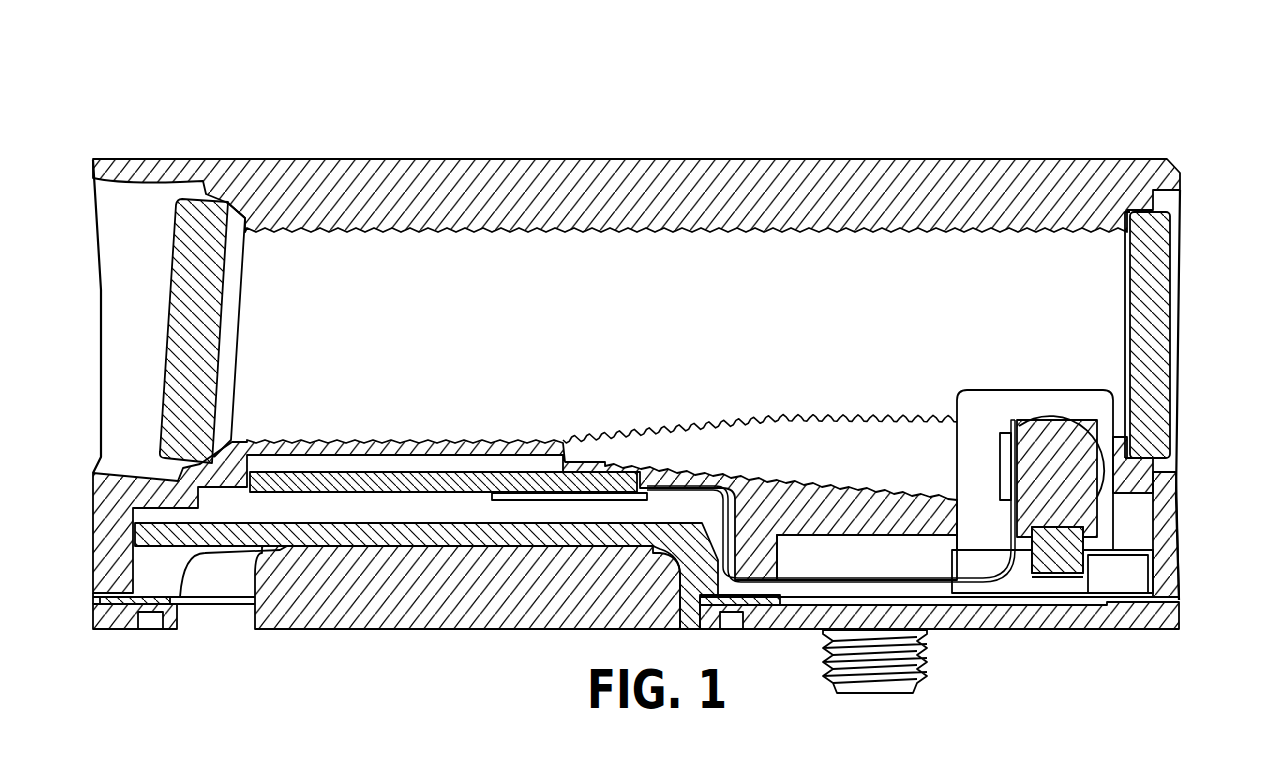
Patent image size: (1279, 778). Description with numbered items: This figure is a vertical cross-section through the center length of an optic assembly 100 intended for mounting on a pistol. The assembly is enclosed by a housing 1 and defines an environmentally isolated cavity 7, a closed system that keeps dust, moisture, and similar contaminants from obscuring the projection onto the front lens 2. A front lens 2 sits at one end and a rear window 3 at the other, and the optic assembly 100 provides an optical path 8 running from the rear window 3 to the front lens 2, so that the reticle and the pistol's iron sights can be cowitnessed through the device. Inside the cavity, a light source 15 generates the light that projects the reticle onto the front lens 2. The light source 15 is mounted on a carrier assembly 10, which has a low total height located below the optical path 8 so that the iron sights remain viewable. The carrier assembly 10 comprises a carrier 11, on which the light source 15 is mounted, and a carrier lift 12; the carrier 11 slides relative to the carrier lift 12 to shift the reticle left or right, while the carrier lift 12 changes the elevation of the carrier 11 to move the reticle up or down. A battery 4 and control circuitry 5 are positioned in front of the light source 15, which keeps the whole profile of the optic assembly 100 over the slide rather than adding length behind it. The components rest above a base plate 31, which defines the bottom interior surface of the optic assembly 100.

The optic assembly 100 is at (438, 135).
The housing cover 1 is at (655, 158).
The front lens 2 is at (218, 332).
The rear window 3 is at (1125, 312).
The battery 4 is at (258, 572).
The control circuitry 5 is at (438, 472).
The environmentally isolated cavity 7 is at (782, 324).
The optical path 8 is at (548, 293).
The carrier assembly 10 is at (1010, 395).
The carrier 11 is at (1058, 420).
The carrier lift 12 is at (1057, 573).
The light source 15 is at (1000, 465).
The base plate 31 is at (1182, 615).